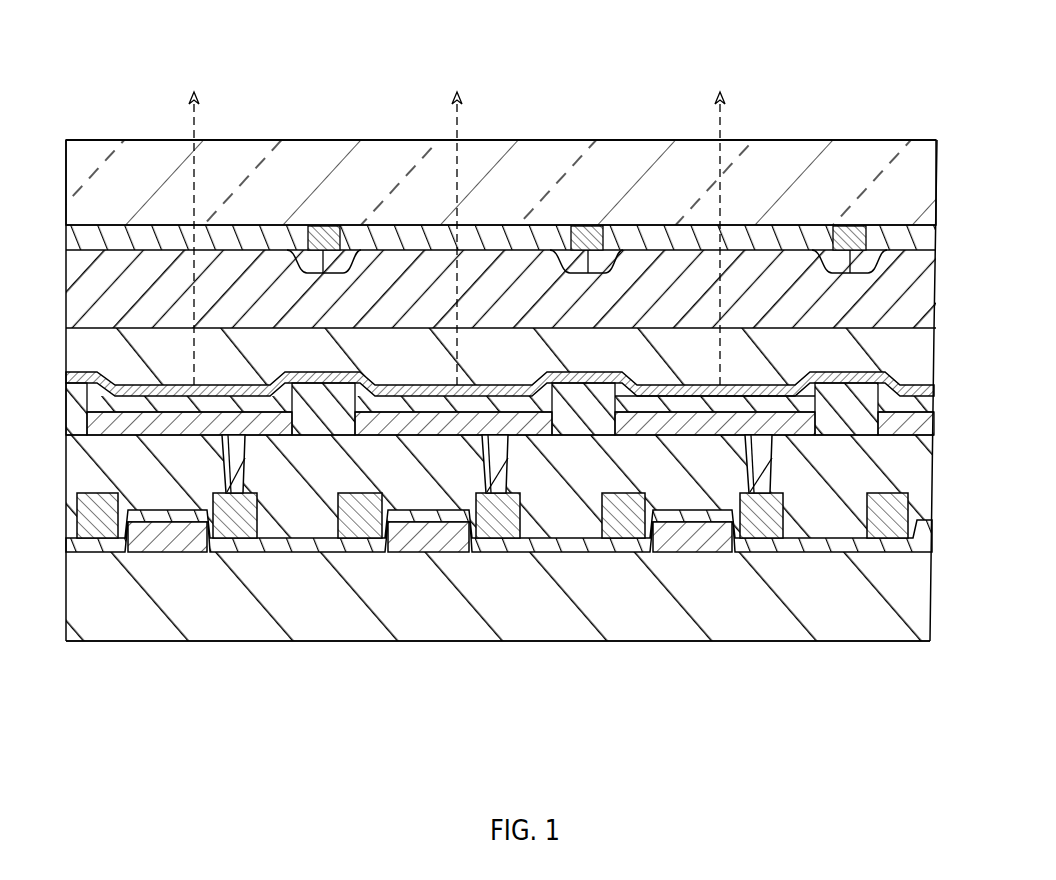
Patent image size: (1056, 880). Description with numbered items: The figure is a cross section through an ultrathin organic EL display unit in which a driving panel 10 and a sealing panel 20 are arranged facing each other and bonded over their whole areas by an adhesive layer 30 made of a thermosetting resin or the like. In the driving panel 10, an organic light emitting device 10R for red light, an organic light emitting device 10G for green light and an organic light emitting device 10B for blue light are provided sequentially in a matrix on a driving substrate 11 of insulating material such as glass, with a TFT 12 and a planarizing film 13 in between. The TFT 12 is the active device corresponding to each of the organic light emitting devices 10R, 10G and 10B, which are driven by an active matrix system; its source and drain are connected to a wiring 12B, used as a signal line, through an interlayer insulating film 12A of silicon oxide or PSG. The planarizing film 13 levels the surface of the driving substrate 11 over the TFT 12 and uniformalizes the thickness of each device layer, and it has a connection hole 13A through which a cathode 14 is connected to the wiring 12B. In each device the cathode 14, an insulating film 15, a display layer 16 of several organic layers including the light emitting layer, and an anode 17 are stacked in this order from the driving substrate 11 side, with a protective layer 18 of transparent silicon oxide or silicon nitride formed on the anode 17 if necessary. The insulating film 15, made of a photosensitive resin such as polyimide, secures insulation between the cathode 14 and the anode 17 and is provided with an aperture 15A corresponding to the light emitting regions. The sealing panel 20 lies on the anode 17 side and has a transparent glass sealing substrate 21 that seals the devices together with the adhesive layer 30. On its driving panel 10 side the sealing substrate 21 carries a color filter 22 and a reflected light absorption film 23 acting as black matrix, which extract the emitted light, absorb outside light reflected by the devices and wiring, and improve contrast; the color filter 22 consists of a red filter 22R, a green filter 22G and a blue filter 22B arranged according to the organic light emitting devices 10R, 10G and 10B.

The driving panel 10 is at (920, 659).
The organic light emitting device for generating red light 10R is at (263, 447).
The organic light emitting device for generating green light 10G is at (524, 447).
The organic light emitting device for generating blue light 10B is at (786, 447).
The driving substrate 11 is at (920, 592).
The TFT 12 is at (165, 540).
The interlayer insulating film 12A is at (80, 553).
The wiring 12B is at (112, 540).
The planarizing film 13 is at (335, 490).
The connection hole 13A is at (481, 452).
The cathode 14 is at (917, 436).
The insulating film 15 is at (850, 422).
The aperture 15A is at (745, 405).
The display layer 16 is at (915, 406).
The anode 17 is at (920, 387).
The protective layer 18 is at (915, 350).
The sealing panel 20 is at (950, 165).
The sealing substrate 21 is at (910, 190).
The color filter 22 is at (501, 133).
The red filter 22R is at (258, 242).
The green filter 22G is at (528, 242).
The blue filter 22B is at (718, 156).
The reflected light absorption film 23 is at (850, 228).
The adhesive layer 30 is at (908, 277).